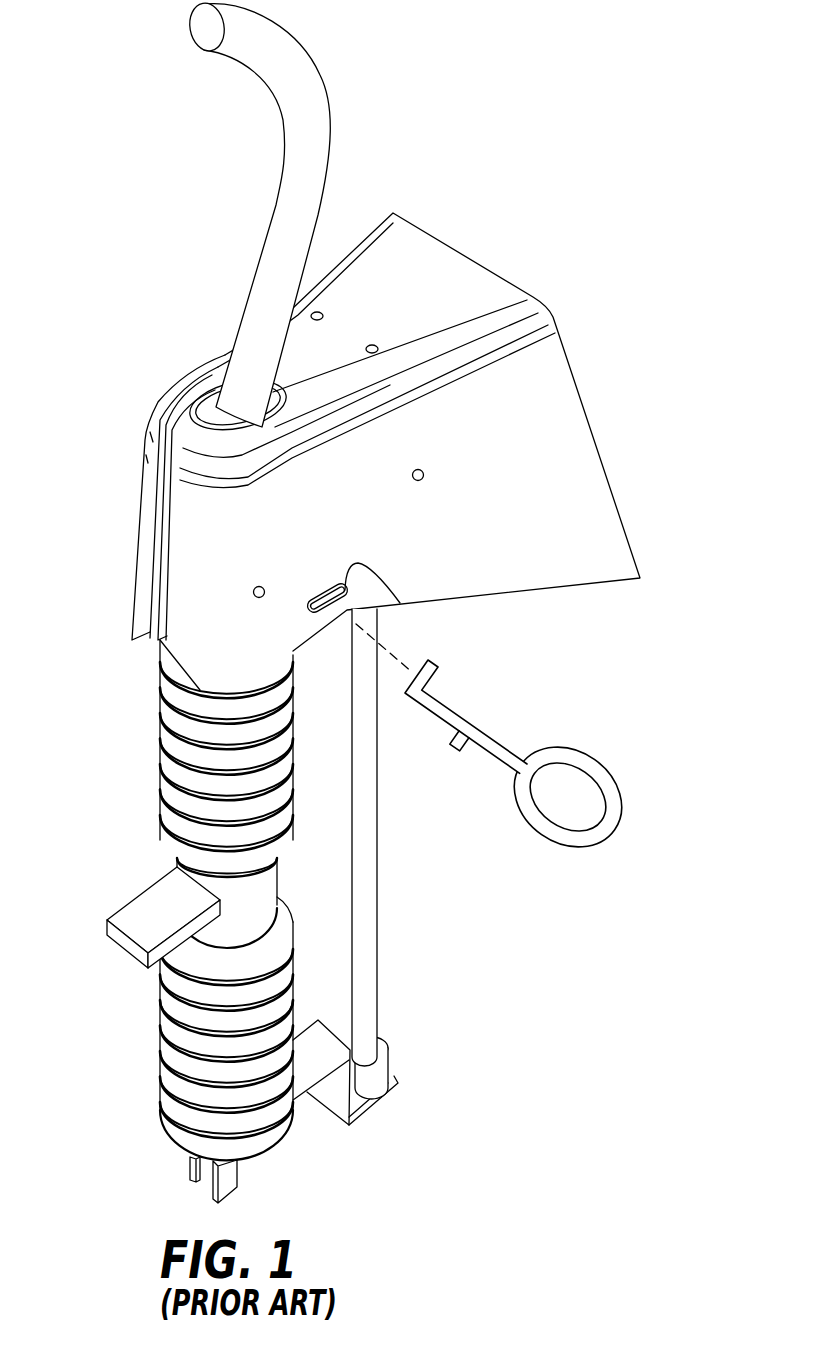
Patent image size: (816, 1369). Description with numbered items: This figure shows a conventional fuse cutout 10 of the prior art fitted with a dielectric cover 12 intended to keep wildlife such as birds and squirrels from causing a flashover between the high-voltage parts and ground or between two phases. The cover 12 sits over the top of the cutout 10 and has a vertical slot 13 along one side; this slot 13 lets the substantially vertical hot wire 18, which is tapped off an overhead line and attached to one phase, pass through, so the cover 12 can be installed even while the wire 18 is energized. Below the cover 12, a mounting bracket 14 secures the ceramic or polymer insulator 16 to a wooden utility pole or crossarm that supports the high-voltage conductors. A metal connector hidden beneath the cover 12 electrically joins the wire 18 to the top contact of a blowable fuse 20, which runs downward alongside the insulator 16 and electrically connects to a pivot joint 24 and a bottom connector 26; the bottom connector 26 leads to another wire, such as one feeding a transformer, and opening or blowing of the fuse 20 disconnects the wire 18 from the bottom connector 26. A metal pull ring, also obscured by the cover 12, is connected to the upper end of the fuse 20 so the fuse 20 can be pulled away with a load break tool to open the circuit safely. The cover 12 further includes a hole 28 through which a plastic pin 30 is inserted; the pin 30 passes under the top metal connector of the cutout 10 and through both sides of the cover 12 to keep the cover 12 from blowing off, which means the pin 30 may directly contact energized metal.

The fuse cutout 10 is at (118, 736).
The dielectric cover 12 is at (553, 385).
The vertical slot 13 is at (150, 495).
The mounting bracket 14 is at (138, 918).
The insulator 16 is at (168, 1125).
The wire 18 is at (320, 125).
The blowable fuse 20 is at (375, 833).
The pivot joint 24 is at (388, 1062).
The bottom connector 26 is at (233, 1183).
The hole 28 is at (400, 603).
The plastic pin 30 is at (500, 750).